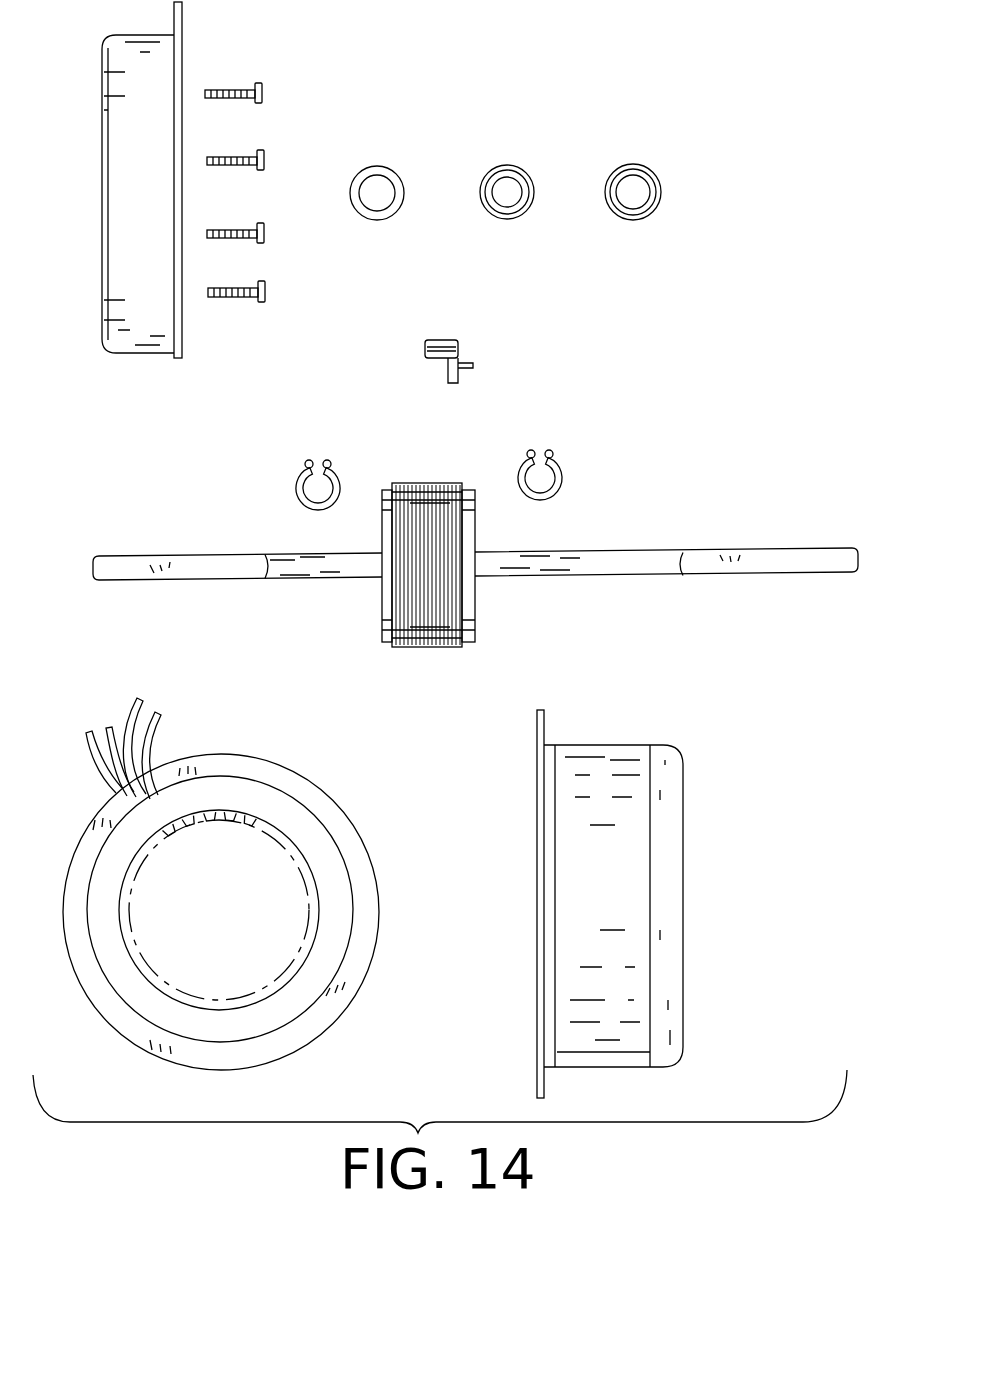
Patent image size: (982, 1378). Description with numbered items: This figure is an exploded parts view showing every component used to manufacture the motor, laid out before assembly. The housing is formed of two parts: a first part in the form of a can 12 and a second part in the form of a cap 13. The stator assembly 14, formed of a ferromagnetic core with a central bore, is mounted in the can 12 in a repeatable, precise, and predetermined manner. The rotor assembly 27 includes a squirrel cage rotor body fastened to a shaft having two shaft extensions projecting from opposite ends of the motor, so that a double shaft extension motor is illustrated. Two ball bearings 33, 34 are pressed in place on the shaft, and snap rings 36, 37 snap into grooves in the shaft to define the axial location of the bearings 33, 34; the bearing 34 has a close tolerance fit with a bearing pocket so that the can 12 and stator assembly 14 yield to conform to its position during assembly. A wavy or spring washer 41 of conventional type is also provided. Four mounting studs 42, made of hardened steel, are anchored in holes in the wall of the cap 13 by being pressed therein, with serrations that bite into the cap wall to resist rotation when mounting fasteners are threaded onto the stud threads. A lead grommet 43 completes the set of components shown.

The can 12 is at (683, 778).
The cap 13 is at (156, 171).
The stator assembly 14 is at (330, 797).
The rotor assembly 27 is at (475, 607).
The ball bearing 33 is at (500, 166).
The ball bearing 34 is at (627, 165).
The snap ring 36 is at (303, 474).
The snap ring 37 is at (557, 465).
The wavy or spring washer 41 is at (372, 166).
The mounting studs 42 is at (221, 90).
The lead grommet 43 is at (445, 340).